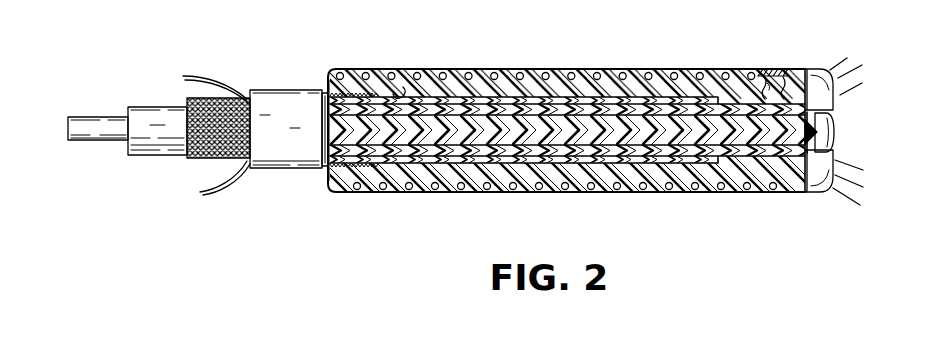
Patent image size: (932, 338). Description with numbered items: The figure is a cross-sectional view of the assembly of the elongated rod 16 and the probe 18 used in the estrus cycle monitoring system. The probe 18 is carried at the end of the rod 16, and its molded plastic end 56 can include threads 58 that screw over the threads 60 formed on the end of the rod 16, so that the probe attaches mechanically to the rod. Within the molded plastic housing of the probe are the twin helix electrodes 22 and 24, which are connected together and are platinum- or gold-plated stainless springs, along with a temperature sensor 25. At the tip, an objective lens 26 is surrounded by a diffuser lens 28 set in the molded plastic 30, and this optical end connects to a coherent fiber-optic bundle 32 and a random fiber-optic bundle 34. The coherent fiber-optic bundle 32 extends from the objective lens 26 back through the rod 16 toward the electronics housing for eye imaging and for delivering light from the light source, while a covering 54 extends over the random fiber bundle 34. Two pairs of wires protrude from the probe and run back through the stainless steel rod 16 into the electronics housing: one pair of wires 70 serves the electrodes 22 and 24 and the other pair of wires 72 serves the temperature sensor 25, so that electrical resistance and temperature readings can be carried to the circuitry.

The elongated rod 16 is at (292, 168).
The probe 18 is at (331, 190).
The helix electrode 22 is at (750, 72).
The helix electrode 24 is at (727, 72).
The temperature sensor 25 is at (767, 83).
The objective lens 26 is at (838, 135).
The diffuser lens 28 is at (836, 168).
The molded plastic 30 is at (797, 191).
The coherent fiber-optic bundle 32 is at (828, 120).
The random fiber-optic bundle 34 is at (772, 147).
The covering 54 is at (191, 160).
The molded plastic end 56 is at (327, 93).
The threads 58 is at (368, 88).
The threads 60 is at (324, 93).
The wires 70 is at (212, 194).
The wires 72 is at (200, 74).